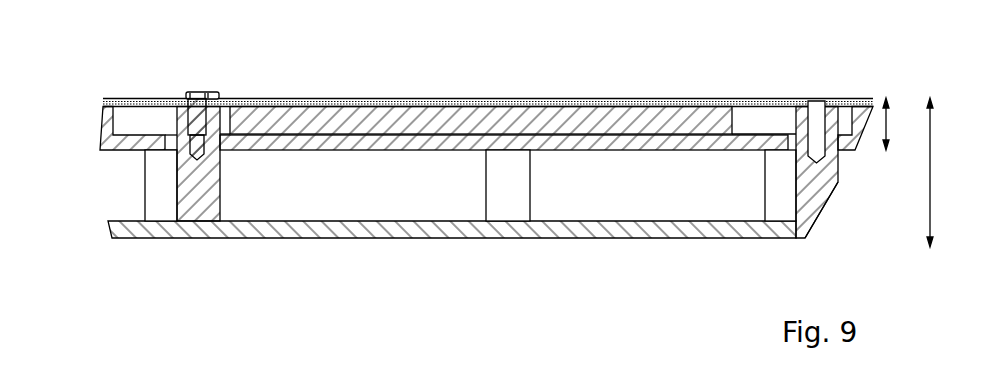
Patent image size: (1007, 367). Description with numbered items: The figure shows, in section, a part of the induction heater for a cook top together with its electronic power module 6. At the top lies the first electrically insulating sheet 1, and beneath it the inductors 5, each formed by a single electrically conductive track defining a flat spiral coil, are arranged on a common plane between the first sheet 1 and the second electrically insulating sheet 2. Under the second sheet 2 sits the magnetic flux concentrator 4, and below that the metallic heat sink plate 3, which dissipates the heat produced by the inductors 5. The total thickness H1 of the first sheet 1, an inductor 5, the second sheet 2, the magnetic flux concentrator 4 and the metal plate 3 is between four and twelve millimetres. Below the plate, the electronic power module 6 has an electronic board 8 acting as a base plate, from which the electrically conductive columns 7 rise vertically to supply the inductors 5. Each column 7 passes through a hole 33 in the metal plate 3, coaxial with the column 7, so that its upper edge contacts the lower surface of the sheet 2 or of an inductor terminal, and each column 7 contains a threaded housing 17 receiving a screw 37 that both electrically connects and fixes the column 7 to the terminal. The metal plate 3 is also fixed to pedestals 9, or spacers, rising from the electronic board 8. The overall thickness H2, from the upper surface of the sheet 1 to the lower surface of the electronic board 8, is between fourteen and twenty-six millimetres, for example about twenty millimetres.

The first electrically insulating sheet 1 is at (123, 100).
The second electrically insulating sheet 2 is at (103, 103).
The metallic heat sink plate 3 is at (133, 142).
The magnetic flux concentrator 4 is at (302, 112).
The inductor 5 is at (405, 103).
The electronic power module 6 is at (258, 245).
The column 7 is at (187, 177).
The electronic board 8 is at (130, 227).
The pedestal 9 is at (513, 192).
The threaded housing 17 is at (825, 122).
The hole 33 is at (842, 138).
The screw 37 is at (187, 95).
The total thickness H1 is at (900, 124).
The total thickness H2 is at (945, 172).